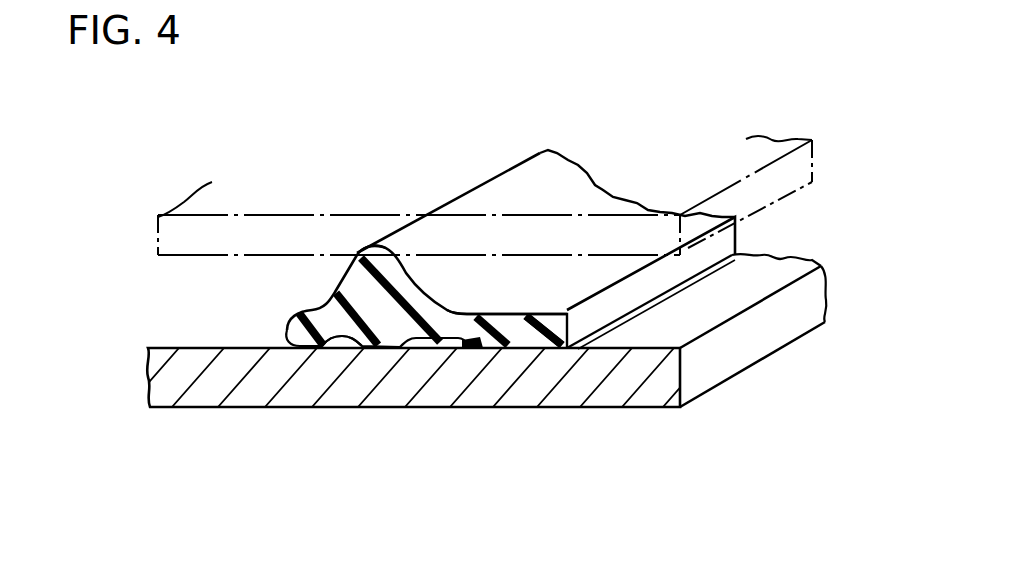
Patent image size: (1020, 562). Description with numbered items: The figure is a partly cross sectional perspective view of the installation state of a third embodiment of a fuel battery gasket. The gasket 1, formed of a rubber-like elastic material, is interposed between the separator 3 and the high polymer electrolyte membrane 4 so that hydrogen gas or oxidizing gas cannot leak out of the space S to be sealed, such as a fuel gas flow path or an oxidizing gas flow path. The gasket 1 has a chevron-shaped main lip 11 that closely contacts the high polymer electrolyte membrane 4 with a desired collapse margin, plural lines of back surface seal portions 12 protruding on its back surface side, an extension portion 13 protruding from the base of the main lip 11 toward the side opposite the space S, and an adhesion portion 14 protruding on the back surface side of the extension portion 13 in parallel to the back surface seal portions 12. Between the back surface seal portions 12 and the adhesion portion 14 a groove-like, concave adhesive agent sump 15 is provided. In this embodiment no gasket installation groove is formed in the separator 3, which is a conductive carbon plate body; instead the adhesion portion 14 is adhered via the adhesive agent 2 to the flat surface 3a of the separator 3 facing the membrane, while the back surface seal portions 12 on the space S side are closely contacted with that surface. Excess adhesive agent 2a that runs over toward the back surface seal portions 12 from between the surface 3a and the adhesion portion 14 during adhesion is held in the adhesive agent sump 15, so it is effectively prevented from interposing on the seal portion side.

The gasket 1 is at (436, 180).
The adhesive agent 2 is at (532, 344).
The excess adhesive agent 2a is at (470, 313).
The separator 3 is at (210, 398).
The flat surface 3a is at (707, 307).
The high polymer electrolyte membrane 4 is at (236, 177).
The main lip 11 is at (377, 247).
The back surface seal portions 12 is at (373, 334).
The extension portion 13 is at (515, 327).
The adhesion portion 14 is at (541, 337).
The adhesive agent sump 15 is at (458, 340).
The space to be sealed S is at (238, 291).